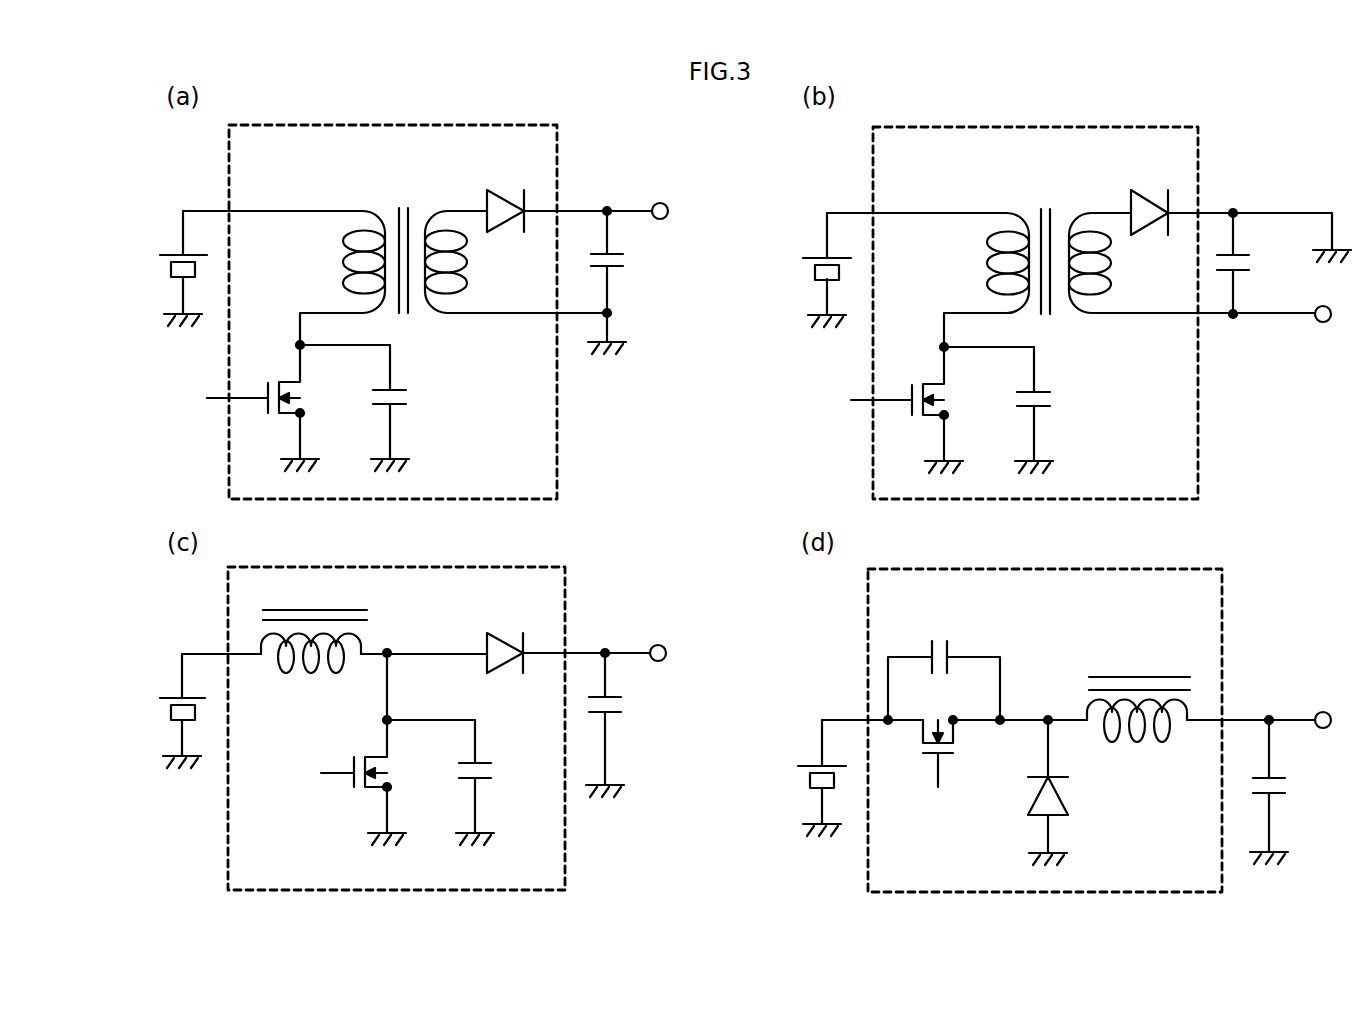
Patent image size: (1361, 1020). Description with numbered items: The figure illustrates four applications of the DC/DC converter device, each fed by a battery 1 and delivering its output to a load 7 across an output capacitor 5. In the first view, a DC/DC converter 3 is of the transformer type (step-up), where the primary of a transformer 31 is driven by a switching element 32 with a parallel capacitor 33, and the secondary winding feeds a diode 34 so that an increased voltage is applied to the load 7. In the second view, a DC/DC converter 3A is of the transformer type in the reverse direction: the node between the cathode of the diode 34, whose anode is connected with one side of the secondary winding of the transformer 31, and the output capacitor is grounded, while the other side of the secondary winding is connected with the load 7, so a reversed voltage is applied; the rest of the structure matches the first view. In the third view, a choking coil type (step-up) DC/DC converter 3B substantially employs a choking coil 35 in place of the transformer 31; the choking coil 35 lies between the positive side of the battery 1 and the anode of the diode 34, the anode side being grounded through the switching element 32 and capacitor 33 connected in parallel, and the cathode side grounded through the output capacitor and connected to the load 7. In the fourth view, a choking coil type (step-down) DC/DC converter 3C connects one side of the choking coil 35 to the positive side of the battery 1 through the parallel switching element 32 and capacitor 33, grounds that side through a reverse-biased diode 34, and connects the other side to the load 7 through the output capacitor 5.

The battery 1 is at (150, 266).
The DC/DC converter 3 is at (476, 122).
The DC/DC converter 3A is at (1118, 123).
The DC/DC converter 3B is at (474, 566).
The DC/DC converter 3C is at (1113, 566).
The output capacitor 5 is at (632, 258).
The load 7 is at (661, 200).
The transformer 31 is at (403, 196).
The switching element 32 is at (313, 399).
The capacitor 33 is at (412, 399).
The diode 34 is at (509, 186).
The choking coil 35 is at (313, 683).